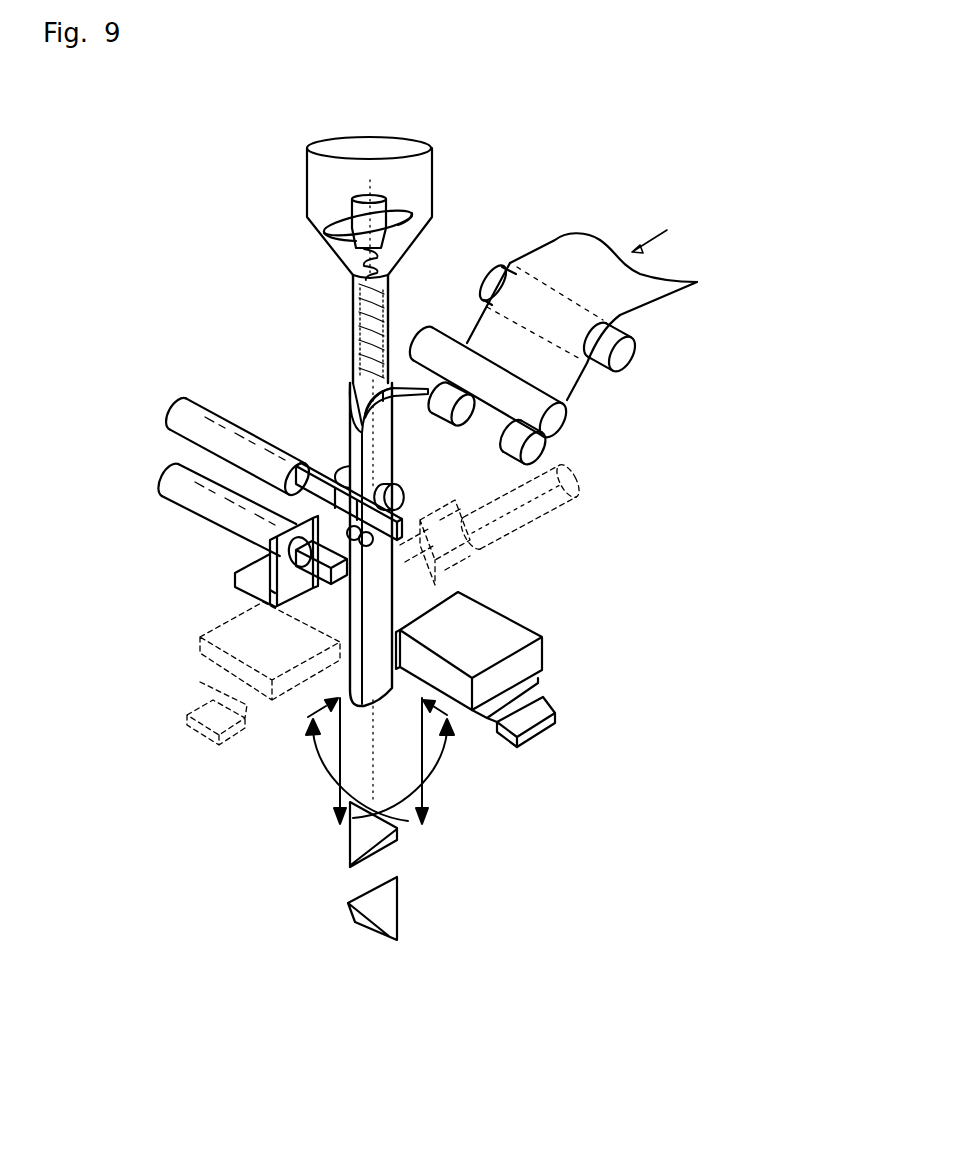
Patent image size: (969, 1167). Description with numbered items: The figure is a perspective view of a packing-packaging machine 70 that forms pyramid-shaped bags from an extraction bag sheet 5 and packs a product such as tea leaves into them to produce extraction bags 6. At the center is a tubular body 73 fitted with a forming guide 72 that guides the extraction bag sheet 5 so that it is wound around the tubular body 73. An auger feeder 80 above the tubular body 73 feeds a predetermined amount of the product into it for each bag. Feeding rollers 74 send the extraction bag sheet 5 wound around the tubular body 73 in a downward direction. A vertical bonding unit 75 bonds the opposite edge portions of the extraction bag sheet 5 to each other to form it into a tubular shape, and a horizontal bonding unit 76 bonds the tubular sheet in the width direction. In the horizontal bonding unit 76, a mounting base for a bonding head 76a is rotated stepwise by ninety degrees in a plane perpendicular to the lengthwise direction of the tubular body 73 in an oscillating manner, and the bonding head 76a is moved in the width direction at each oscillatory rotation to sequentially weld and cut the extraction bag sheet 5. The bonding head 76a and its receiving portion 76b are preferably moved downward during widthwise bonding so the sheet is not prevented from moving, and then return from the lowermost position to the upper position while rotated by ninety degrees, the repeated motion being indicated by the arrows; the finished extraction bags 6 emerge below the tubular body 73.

The extraction bag sheet 5 is at (550, 242).
The extraction bag 6 is at (348, 860).
The packing-packaging machine 70 is at (472, 1002).
The forming guide 72 is at (407, 393).
The tubular body 73 is at (352, 358).
The feeding rollers 74 is at (398, 490).
The vertical bonding unit 75 is at (172, 413).
The horizontal bonding unit 76 is at (165, 487).
The bonding head 76a is at (344, 573).
The receiving portion 76b is at (513, 622).
The auger feeder 80 is at (362, 262).